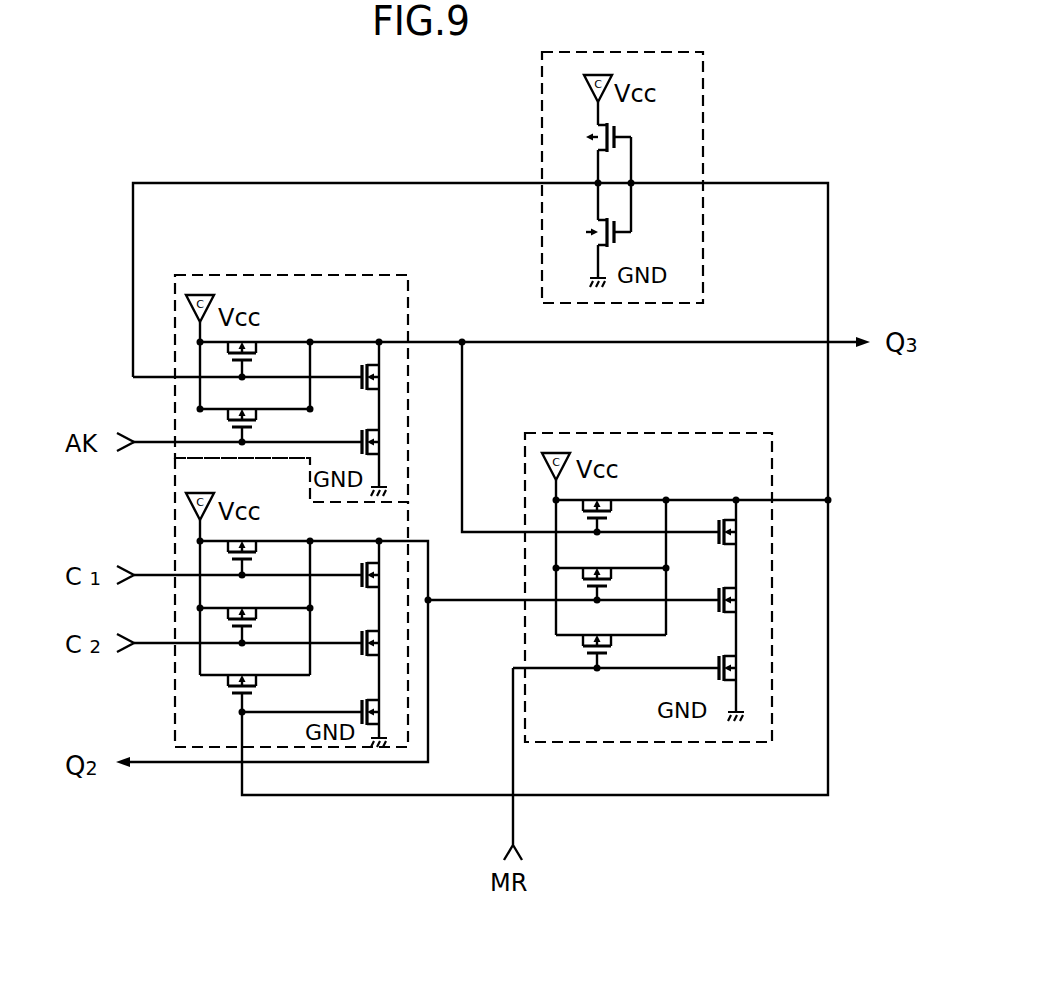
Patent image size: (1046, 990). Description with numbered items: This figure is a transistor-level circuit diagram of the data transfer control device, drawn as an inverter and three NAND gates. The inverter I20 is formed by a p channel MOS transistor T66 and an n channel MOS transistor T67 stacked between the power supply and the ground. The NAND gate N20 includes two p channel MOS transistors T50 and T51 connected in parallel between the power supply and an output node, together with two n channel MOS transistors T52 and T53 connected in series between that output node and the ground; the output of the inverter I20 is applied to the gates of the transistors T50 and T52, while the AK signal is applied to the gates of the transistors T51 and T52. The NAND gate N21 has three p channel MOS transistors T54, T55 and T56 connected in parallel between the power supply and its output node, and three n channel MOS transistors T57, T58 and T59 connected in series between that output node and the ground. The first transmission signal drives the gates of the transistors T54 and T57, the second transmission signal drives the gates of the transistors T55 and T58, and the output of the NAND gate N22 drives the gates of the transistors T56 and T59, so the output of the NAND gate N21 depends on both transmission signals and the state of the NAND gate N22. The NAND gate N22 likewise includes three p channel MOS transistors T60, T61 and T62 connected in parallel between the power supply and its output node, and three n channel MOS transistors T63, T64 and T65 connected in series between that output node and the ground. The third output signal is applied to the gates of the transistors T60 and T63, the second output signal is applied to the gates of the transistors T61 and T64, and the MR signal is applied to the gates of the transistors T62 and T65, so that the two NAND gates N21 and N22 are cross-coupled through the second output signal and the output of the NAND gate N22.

The NAND gate N20 is at (312, 275).
The NAND gate N21 is at (175, 711).
The NAND gate N22 is at (678, 433).
The inverter I20 is at (703, 115).
The p channel MOS transistor T50 is at (265, 359).
The p channel MOS transistor T51 is at (267, 425).
The n channel MOS transistor T52 is at (350, 369).
The n channel MOS transistor T53 is at (354, 429).
The p channel MOS transistor T54 is at (266, 558).
The p channel MOS transistor T55 is at (267, 625).
The p channel MOS transistor T56 is at (267, 693).
The n channel MOS transistor T57 is at (352, 564).
The n channel MOS transistor T58 is at (356, 628).
The n channel MOS transistor T59 is at (357, 698).
The p channel MOS transistor T60 is at (620, 516).
The p channel MOS transistor T61 is at (619, 584).
The p channel MOS transistor T62 is at (621, 651).
The n channel MOS transistor T63 is at (707, 525).
The n channel MOS transistor T64 is at (712, 586).
The n channel MOS transistor T65 is at (713, 654).
The p channel MOS transistor T66 is at (631, 137).
The n channel MOS transistor T67 is at (631, 232).